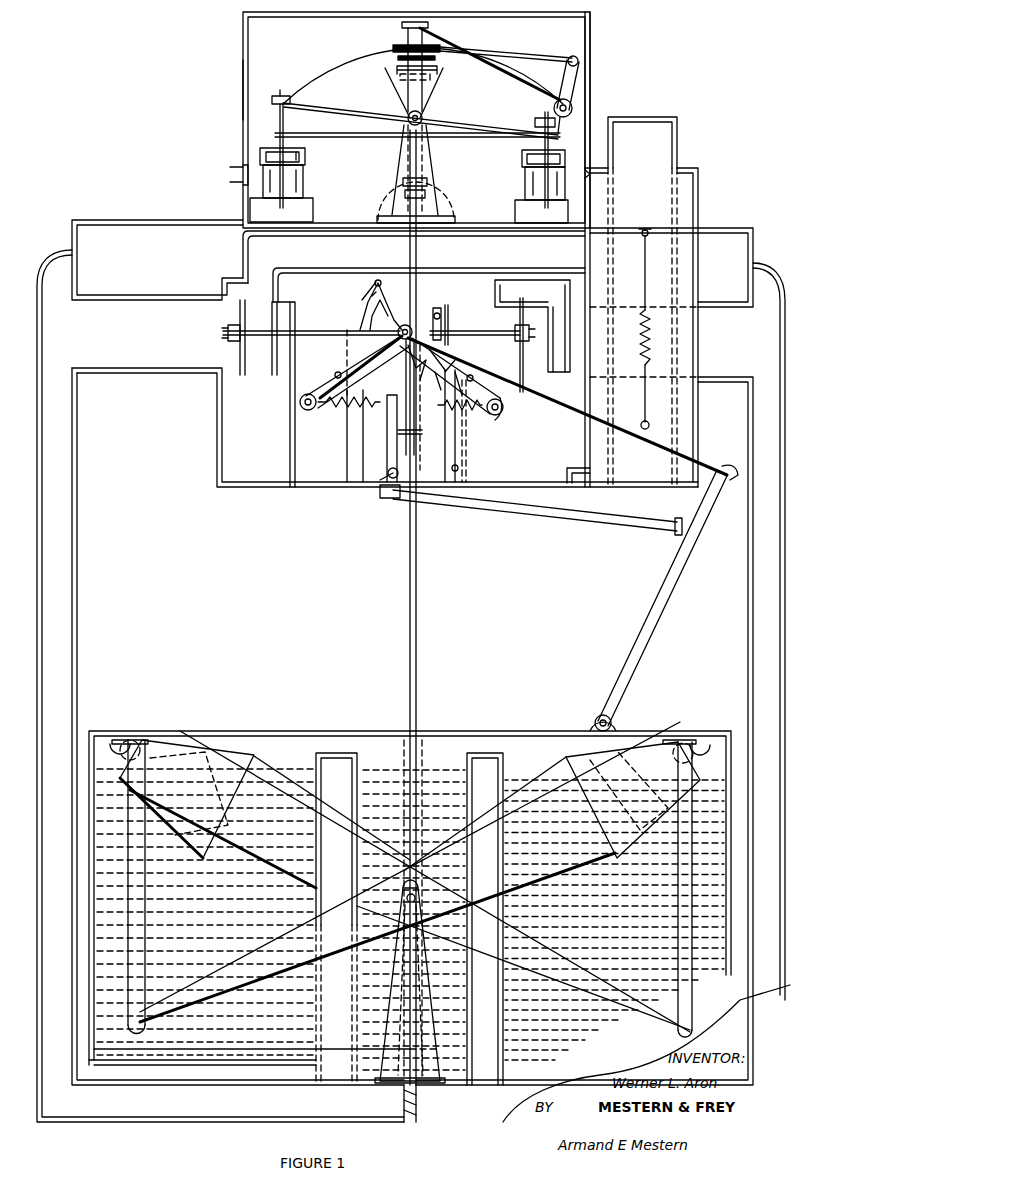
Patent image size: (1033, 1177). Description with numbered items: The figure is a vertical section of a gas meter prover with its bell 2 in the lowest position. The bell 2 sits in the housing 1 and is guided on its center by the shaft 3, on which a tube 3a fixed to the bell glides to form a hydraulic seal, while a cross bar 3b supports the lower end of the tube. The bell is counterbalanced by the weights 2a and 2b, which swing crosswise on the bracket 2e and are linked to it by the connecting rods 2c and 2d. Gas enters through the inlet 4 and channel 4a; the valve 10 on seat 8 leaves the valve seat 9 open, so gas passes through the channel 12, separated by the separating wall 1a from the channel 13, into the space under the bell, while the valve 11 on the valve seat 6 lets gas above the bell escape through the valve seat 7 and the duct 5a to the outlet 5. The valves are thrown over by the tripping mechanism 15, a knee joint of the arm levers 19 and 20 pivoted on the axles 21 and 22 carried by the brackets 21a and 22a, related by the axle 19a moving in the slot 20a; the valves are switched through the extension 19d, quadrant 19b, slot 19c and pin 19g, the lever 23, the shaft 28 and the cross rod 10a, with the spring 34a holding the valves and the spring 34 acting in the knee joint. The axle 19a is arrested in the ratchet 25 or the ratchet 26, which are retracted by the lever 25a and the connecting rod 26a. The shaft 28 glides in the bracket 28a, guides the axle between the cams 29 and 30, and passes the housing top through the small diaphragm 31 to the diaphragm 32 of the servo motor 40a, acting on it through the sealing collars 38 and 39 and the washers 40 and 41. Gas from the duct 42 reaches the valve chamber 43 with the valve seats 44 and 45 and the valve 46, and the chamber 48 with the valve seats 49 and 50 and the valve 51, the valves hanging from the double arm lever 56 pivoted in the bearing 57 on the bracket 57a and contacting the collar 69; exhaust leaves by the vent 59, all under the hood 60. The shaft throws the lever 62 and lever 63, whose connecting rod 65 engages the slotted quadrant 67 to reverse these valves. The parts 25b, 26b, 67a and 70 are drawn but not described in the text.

The housing 1 is at (150, 218).
The separating wall 1a is at (416, 1110).
The bell 2 is at (320, 730).
The weight 2a is at (585, 822).
The weight 2b is at (222, 806).
The connecting rod 2c is at (690, 898).
The connecting rod 2d is at (145, 888).
The bracket 2e is at (426, 985).
The shaft 3 is at (418, 592).
The tube 3a is at (418, 760).
The cross bar 3b is at (270, 1050).
The inlet 4 is at (680, 135).
The channel 4a is at (600, 450).
The outlet 5 is at (700, 205).
The duct 5a is at (360, 253).
The valve seat 6 is at (242, 380).
The valve seat 7 is at (274, 380).
The valve seat 8 is at (522, 372).
The valve seat 9 is at (545, 392).
The valve 10 is at (515, 321).
The cross rod 10a is at (305, 330).
The valve 11 is at (232, 322).
The channel 12 is at (780, 268).
The channel 13 is at (60, 250).
The tripping mechanism 15 is at (392, 362).
The arm lever 19 is at (462, 375).
The axle 19a is at (418, 290).
The quadrant 19b is at (485, 420).
The slot 19c is at (445, 432).
The extension 19d is at (420, 405).
The pin 19g is at (455, 428).
The arm lever 20 is at (333, 368).
The slot 20a is at (380, 330).
The axle 21 is at (352, 352).
The bracket 21a is at (345, 470).
The axle 22 is at (468, 360).
The bracket 22a is at (462, 460).
The lever 23 is at (440, 312).
The ratchet 25 is at (385, 452).
The lever 25a is at (560, 518).
The pivot 25b is at (375, 490).
The ratchet 26 is at (372, 295).
The connecting rod 26a is at (670, 600).
The spring 26b is at (640, 292).
The shaft 28 is at (430, 160).
The bracket 28a is at (400, 288).
The cam 29 is at (375, 318).
The cam 30 is at (374, 294).
The small diaphragm 31 is at (448, 212).
The diaphragm 32 is at (335, 72).
The spring 34 is at (336, 404).
The spring 34a is at (408, 352).
The sealing collar 38 is at (410, 35).
The sealing collar 39 is at (432, 78).
The washer 40 is at (392, 49).
The servo motor 40a is at (235, 85).
The washer 41 is at (396, 68).
The duct 42 is at (592, 172).
The valve chamber 43 is at (525, 170).
The valve seat 44 is at (518, 204).
The valve seat 45 is at (523, 158).
The valve 46 is at (525, 185).
The chamber 48 is at (305, 178).
The valve seat 49 is at (305, 154).
The valve seat 50 is at (312, 188).
The valve 51 is at (310, 166).
The double arm lever 56 is at (356, 104).
The bearing 57 is at (430, 113).
The bracket 57a is at (430, 185).
The vent 59 is at (243, 175).
The hood 60 is at (320, 22).
The lever 62 is at (482, 42).
The lever 63 is at (583, 78).
The connecting rod 65 is at (543, 54).
The slotted quadrant 67 is at (410, 94).
The arm 67a is at (397, 78).
The collar 69 is at (275, 104).
The fitting 70 is at (538, 122).